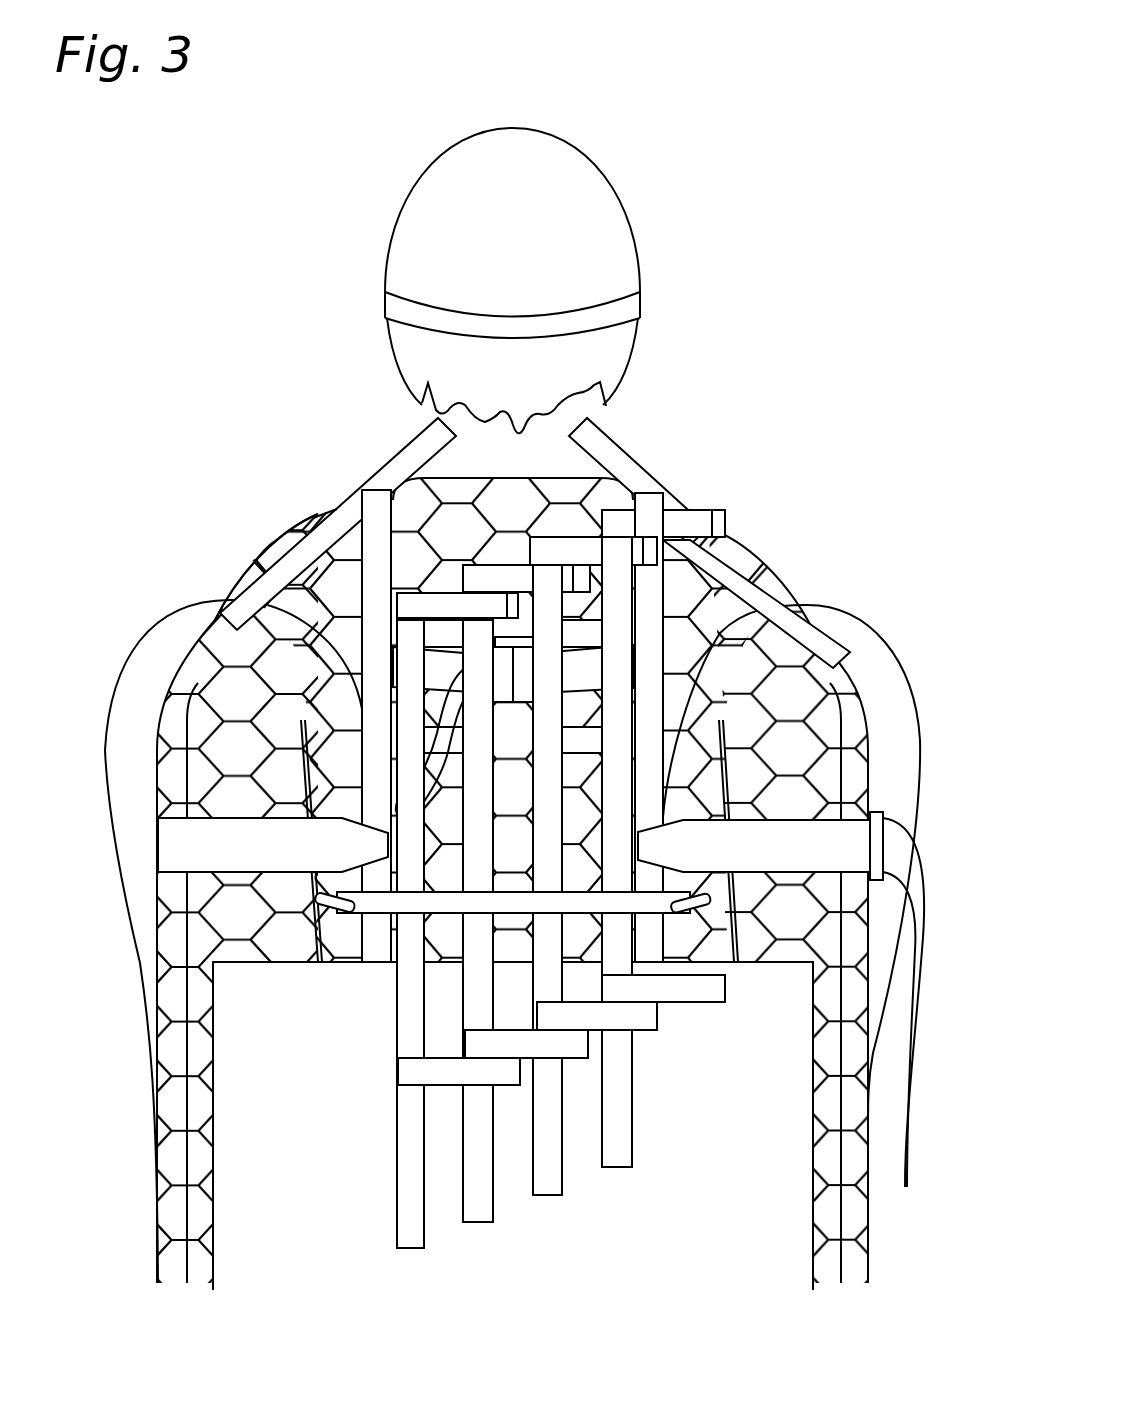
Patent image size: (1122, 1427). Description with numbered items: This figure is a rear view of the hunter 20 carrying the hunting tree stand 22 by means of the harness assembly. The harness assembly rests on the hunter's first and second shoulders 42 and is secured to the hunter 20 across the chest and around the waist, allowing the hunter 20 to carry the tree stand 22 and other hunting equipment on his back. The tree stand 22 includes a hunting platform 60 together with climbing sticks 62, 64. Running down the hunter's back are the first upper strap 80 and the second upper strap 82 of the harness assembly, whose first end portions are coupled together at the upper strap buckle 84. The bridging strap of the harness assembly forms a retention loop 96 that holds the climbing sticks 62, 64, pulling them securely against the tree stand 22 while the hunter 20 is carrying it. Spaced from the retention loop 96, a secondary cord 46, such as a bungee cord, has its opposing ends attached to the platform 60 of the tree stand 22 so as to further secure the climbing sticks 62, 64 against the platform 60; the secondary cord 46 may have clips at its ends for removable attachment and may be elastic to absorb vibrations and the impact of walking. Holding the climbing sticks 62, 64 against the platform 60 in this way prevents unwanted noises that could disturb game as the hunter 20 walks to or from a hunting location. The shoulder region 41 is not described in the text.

The hunter 20 is at (593, 156).
The hunting tree stand 22 is at (637, 447).
The left shoulder portion of garment 41 is at (262, 548).
The shoulders 42 is at (763, 548).
The secondary cord 46 is at (380, 905).
The platform 60 is at (213, 928).
The climbing stick 62 is at (453, 603).
The climbing stick 64 is at (677, 580).
The first upper strap 80 is at (332, 508).
The second upper strap 82 is at (723, 512).
The upper strap buckle 84 is at (545, 675).
The retention loop 96 is at (408, 662).